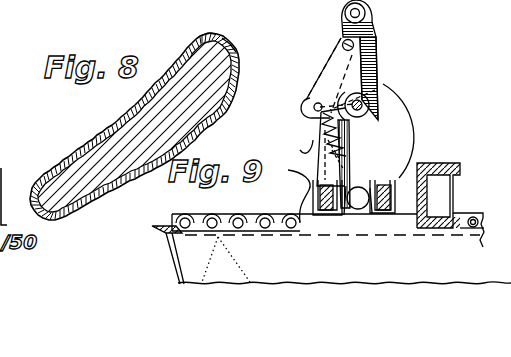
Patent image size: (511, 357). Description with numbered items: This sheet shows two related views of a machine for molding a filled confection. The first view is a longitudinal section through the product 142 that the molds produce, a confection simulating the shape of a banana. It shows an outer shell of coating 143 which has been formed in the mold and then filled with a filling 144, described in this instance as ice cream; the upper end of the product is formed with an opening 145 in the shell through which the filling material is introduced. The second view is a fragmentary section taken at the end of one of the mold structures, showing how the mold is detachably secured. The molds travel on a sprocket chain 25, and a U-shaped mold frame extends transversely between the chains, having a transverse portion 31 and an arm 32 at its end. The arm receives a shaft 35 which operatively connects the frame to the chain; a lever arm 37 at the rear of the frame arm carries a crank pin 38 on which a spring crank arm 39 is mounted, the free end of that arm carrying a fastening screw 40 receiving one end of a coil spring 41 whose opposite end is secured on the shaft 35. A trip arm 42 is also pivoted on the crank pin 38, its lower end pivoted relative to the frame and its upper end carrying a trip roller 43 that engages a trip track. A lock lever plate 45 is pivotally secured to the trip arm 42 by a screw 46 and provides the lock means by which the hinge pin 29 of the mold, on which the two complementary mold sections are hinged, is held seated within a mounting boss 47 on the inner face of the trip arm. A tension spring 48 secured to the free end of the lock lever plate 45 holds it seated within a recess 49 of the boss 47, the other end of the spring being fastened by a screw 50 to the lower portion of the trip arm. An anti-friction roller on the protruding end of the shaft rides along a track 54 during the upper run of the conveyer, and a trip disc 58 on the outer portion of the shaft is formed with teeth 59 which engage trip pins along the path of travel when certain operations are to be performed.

In FIG. 8, the product 142 is at (120, 106).
In FIG. 8, the outer shell of coating 143 is at (230, 98).
In FIG. 8, the filling 144 is at (228, 52).
In FIG. 8, the opening 145 is at (218, 36).
In FIG. 9, the sprocket chain 25 is at (204, 214).
In FIG. 9, the hinge pin 29 is at (371, 101).
In FIG. 9, the transverse portion 31 is at (446, 162).
In FIG. 9, the arm 32 is at (408, 163).
In FIG. 9, the shaft 35 is at (357, 226).
In FIG. 9, the lever arm 37 is at (380, 131).
In FIG. 9, the crank pin 38 is at (377, 89).
In FIG. 9, the spring crank arm 39 is at (325, 86).
In FIG. 9, the fastening screw 40 is at (328, 102).
In FIG. 9, the coil spring 41 is at (320, 146).
In FIG. 9, the trip arm 42 is at (341, 26).
In FIG. 9, the trip roller 43 is at (376, 20).
In FIG. 9, the lock lever plate 45 is at (348, 63).
In FIG. 9, the screw 46 is at (356, 46).
In FIG. 9, the mounting boss 47 is at (378, 108).
In FIG. 9, the tension spring 48 is at (322, 130).
In FIG. 9, the recess 49 is at (370, 72).
In FIG. 9, the screw 50 is at (352, 150).
In FIG. 9, the track 54 is at (206, 263).
In FIG. 9, the trip disc 58 is at (296, 199).
In FIG. 9, the teeth 59 is at (288, 181).